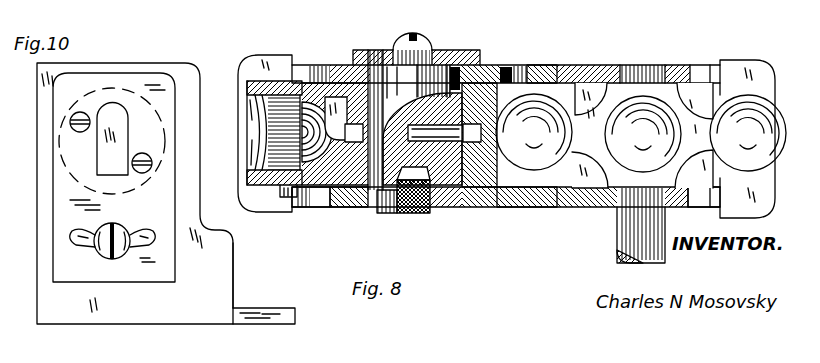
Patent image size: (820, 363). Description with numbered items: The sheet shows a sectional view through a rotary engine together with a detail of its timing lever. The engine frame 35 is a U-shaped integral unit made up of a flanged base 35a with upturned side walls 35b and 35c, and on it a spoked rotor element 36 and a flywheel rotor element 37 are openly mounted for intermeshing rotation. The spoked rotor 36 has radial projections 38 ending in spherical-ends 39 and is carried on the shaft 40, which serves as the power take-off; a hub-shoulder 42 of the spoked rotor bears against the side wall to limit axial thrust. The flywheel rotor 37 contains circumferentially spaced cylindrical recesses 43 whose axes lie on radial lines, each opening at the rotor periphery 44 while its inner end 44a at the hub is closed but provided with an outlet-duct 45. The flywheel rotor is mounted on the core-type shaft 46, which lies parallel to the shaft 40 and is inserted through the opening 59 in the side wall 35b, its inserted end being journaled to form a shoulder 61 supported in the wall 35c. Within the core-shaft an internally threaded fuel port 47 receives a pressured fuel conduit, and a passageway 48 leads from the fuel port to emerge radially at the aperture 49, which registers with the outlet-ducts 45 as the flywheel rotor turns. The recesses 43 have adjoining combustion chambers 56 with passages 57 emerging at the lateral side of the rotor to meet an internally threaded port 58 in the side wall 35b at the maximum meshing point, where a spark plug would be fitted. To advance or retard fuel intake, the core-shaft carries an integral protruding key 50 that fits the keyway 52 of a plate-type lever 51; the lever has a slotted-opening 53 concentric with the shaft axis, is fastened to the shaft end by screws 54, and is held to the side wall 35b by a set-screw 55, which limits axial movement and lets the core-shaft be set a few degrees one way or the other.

In FIG. 10, the engine frame 35 is at (213, 325).
In FIG. 8, the engine frame 35 is at (493, 66).
In FIG. 10, the flanged base 35a is at (282, 314).
In FIG. 8, the flanged base 35a is at (738, 67).
In FIG. 10, the side wall 35b is at (233, 266).
In FIG. 8, the side wall 35b is at (616, 69).
In FIG. 8, the side wall 35c is at (558, 207).
In FIG. 8, the spoked rotor element 36 is at (674, 208).
In FIG. 8, the flywheel rotor element 37 is at (318, 200).
In FIG. 8, the radial projections 38 is at (645, 128).
In FIG. 8, the spherical-ends 39 is at (641, 133).
In FIG. 8, the shaft 40 is at (662, 67).
In FIG. 8, the hub-shoulder 42 is at (667, 183).
In FIG. 8, the recesses 43 is at (262, 156).
In FIG. 8, the rotor periphery 44 is at (253, 128).
In FIG. 8, the inner end 44a is at (285, 188).
In FIG. 8, the outlet-duct 45 is at (416, 132).
In FIG. 10, the core-type shaft 46 is at (121, 206).
In FIG. 8, the core-type shaft 46 is at (407, 102).
In FIG. 8, the fuel port 47 is at (418, 214).
In FIG. 8, the passageway 48 is at (402, 133).
In FIG. 8, the aperture 49 is at (452, 88).
In FIG. 10, the key 50 is at (112, 140).
In FIG. 8, the key 50 is at (387, 53).
In FIG. 8, the plate-type lever 51 is at (446, 64).
In FIG. 10, the keyway 52 is at (130, 128).
In FIG. 10, the slotted-opening 53 is at (94, 243).
In FIG. 10, the screws 54 is at (77, 114).
In FIG. 10, the set-screw 55 is at (115, 259).
In FIG. 8, the set-screw 55 is at (411, 36).
In FIG. 8, the combustion chambers 56 is at (343, 67).
In FIG. 8, the passages 57 is at (543, 71).
In FIG. 8, the internally-threaded port 58 is at (520, 63).
In FIG. 8, the opening 59 is at (493, 60).
In FIG. 8, the shoulder 61 is at (367, 200).